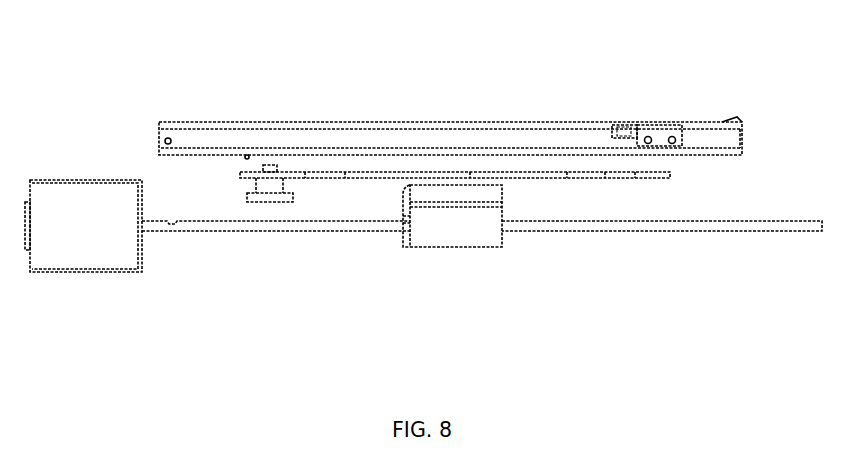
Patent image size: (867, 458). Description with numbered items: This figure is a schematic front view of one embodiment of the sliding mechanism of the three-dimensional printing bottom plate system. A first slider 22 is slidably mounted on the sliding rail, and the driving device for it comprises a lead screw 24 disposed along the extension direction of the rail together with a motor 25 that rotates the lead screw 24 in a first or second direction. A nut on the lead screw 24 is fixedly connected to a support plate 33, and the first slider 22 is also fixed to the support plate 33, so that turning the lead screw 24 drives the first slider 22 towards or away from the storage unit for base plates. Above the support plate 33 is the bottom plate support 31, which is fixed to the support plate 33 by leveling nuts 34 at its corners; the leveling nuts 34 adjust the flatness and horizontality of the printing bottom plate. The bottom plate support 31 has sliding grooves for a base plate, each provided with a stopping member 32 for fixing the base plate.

The first slider 22 is at (447, 228).
The lead screw 24 is at (615, 225).
The motor 25 is at (83, 235).
The bottom plate support 31 is at (279, 140).
The stopping member 32 is at (627, 127).
The support plate 33 is at (352, 175).
The leveling nut 34 is at (267, 185).